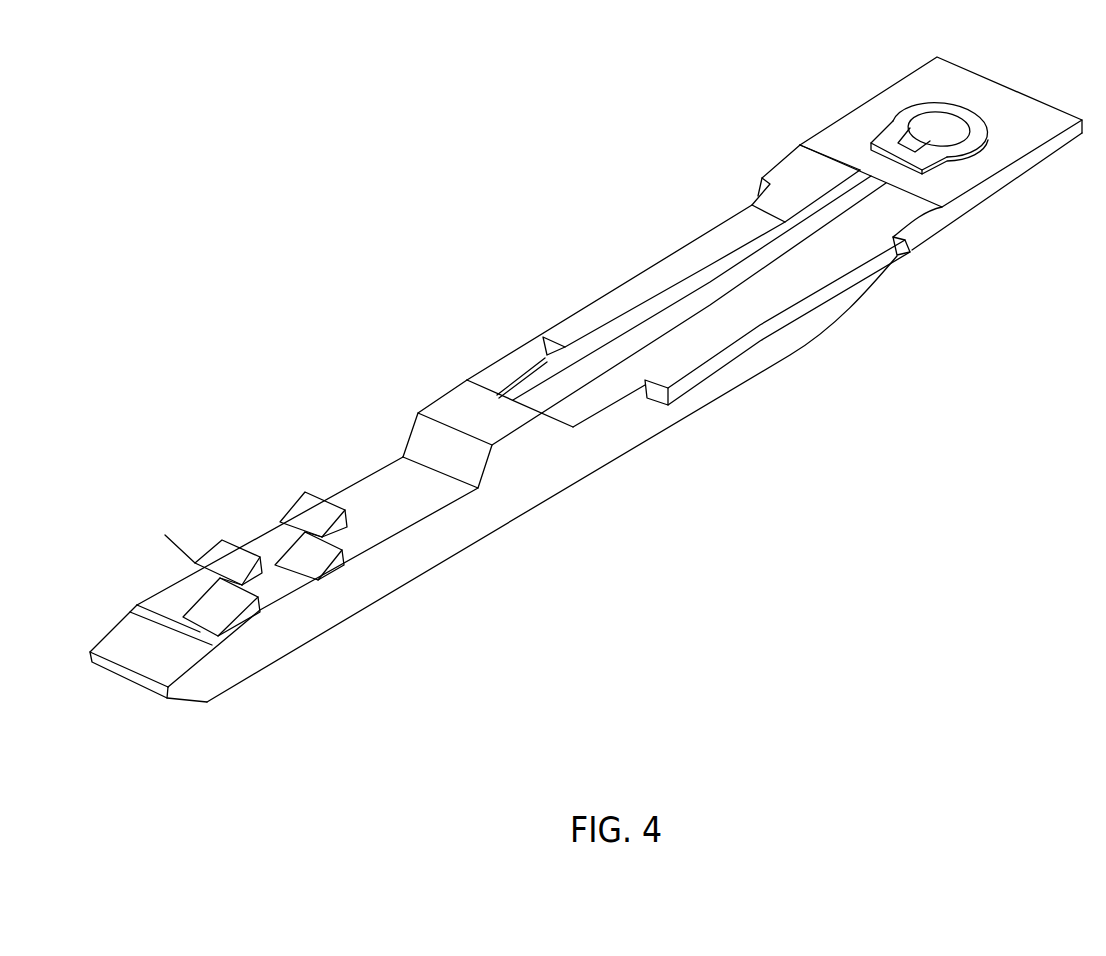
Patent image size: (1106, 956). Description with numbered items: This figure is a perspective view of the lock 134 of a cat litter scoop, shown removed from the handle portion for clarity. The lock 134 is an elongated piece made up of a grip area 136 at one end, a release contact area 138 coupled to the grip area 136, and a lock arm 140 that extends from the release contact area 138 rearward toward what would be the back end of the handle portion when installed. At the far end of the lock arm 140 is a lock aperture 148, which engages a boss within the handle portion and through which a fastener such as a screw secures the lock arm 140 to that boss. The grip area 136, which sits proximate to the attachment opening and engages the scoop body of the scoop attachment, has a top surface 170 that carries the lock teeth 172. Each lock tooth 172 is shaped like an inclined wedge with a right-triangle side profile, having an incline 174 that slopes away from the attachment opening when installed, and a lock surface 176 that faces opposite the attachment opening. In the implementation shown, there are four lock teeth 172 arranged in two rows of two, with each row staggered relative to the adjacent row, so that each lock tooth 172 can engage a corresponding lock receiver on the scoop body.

The lock 134 is at (558, 172).
The grip area 136 is at (408, 572).
The release contact area 138 is at (535, 460).
The lock arm 140 is at (727, 373).
The lock aperture 148 is at (925, 156).
The top surface 170 is at (387, 483).
The lock tooth 172 is at (215, 540).
The incline 174 is at (323, 515).
The lock surface 176 is at (347, 497).